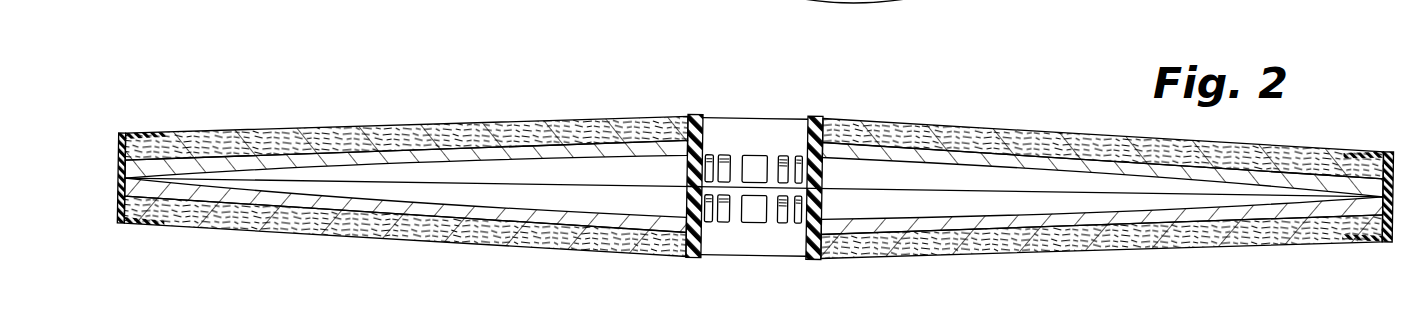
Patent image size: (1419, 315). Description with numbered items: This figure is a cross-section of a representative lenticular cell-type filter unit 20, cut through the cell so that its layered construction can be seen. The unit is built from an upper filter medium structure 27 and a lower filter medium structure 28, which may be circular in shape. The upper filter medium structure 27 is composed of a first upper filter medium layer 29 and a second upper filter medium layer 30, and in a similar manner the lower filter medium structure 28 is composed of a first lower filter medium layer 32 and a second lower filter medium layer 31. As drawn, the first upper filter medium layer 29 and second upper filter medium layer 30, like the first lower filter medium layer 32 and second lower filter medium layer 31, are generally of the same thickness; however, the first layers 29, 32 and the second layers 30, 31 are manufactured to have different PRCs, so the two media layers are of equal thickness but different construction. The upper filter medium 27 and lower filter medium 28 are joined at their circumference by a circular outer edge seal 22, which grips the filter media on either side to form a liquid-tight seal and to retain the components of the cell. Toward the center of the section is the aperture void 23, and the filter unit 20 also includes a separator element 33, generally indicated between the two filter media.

The lenticular cell-type filter unit 20 is at (410, 67).
The outer edge seal 22 is at (150, 133).
The aperture void 23 is at (752, 135).
The upper filter medium structure 27 is at (700, 143).
The lower filter medium structure 28 is at (698, 228).
The first upper filter medium layer 29 is at (424, 137).
The second upper filter medium layer 30 is at (482, 147).
The second lower filter medium layer 31 is at (480, 220).
The first lower filter medium layer 32 is at (550, 240).
The separator element 33 is at (978, 177).